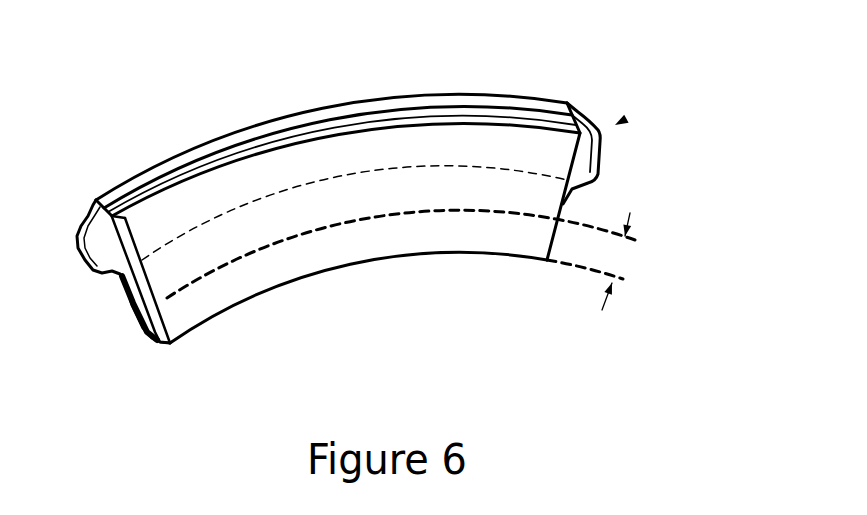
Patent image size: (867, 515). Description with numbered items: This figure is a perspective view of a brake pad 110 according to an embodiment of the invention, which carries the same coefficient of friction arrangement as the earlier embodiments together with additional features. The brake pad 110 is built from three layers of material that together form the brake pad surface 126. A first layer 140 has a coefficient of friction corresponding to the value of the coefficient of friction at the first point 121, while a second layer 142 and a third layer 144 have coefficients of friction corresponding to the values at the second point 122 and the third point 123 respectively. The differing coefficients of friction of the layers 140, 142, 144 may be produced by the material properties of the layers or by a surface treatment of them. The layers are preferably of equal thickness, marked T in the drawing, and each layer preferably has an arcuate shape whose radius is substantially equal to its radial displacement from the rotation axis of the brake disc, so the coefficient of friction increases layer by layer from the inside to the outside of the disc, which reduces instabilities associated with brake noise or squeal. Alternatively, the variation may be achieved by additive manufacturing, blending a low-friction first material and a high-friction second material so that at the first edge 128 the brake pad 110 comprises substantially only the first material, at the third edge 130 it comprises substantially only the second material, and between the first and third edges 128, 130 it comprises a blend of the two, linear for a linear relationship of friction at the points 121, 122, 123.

The brake pad 110 is at (389, 205).
The first point 121 is at (363, 262).
The second point 122 is at (357, 193).
The third point 123 is at (350, 129).
The brake pad surface 126 is at (167, 273).
The first edge 128 is at (240, 307).
The third edge 130 is at (485, 122).
The first layer 140 is at (495, 240).
The second layer 142 is at (533, 190).
The third layer 144 is at (533, 140).